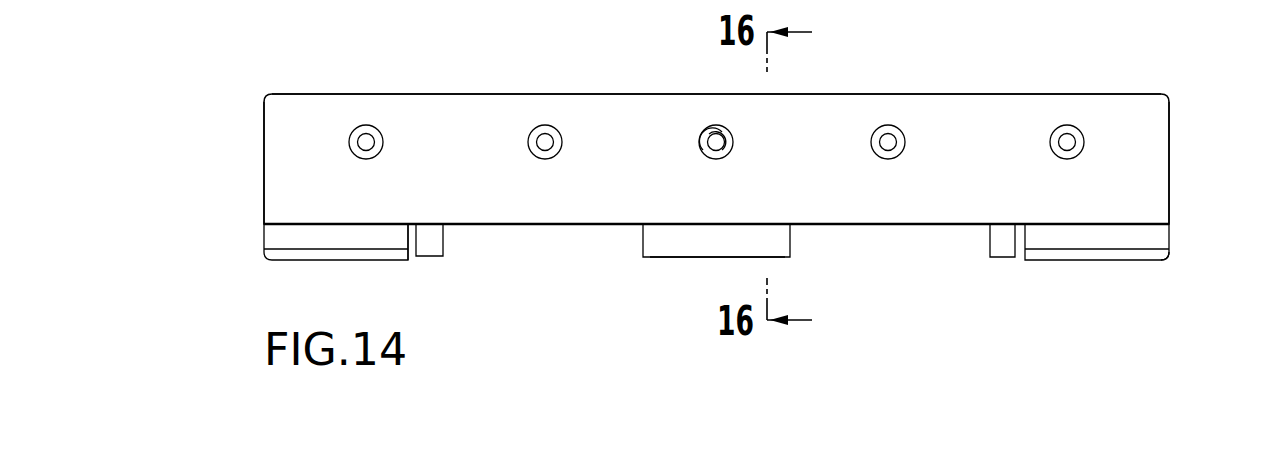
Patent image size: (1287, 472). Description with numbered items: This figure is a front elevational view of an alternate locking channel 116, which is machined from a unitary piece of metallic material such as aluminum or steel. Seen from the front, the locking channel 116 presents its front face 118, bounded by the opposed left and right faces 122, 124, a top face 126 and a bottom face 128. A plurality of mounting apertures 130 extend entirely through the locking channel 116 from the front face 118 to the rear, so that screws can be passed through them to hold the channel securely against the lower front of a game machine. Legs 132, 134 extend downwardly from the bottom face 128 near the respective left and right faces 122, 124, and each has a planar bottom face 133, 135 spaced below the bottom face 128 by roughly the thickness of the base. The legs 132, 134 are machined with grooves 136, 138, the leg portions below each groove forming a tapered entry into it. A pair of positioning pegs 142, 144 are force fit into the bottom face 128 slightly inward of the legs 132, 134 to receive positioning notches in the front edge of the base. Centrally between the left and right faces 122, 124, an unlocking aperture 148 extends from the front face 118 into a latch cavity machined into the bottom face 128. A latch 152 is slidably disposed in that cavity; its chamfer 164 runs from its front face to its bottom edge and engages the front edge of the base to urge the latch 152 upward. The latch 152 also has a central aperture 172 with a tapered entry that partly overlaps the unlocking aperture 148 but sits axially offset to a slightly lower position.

The locking channel 116 is at (716, 161).
The front face 118 is at (438, 98).
The left face 122 is at (264, 148).
The right face 124 is at (1171, 140).
The top face 126 is at (962, 95).
The bottom face 128 is at (855, 226).
The mounting apertures 130 is at (352, 134).
The leg 132 is at (327, 263).
The bottom face of leg 133 is at (393, 262).
The leg 134 is at (1128, 260).
The bottom face of leg 135 is at (1145, 262).
The groove 136 is at (272, 236).
The groove 138 is at (1165, 238).
The positioning peg 142 is at (445, 240).
The positioning peg 144 is at (990, 243).
The unlocking aperture 148 is at (705, 131).
The latch 152 is at (690, 268).
The chamfer 164 is at (667, 252).
The central aperture 172 is at (727, 138).